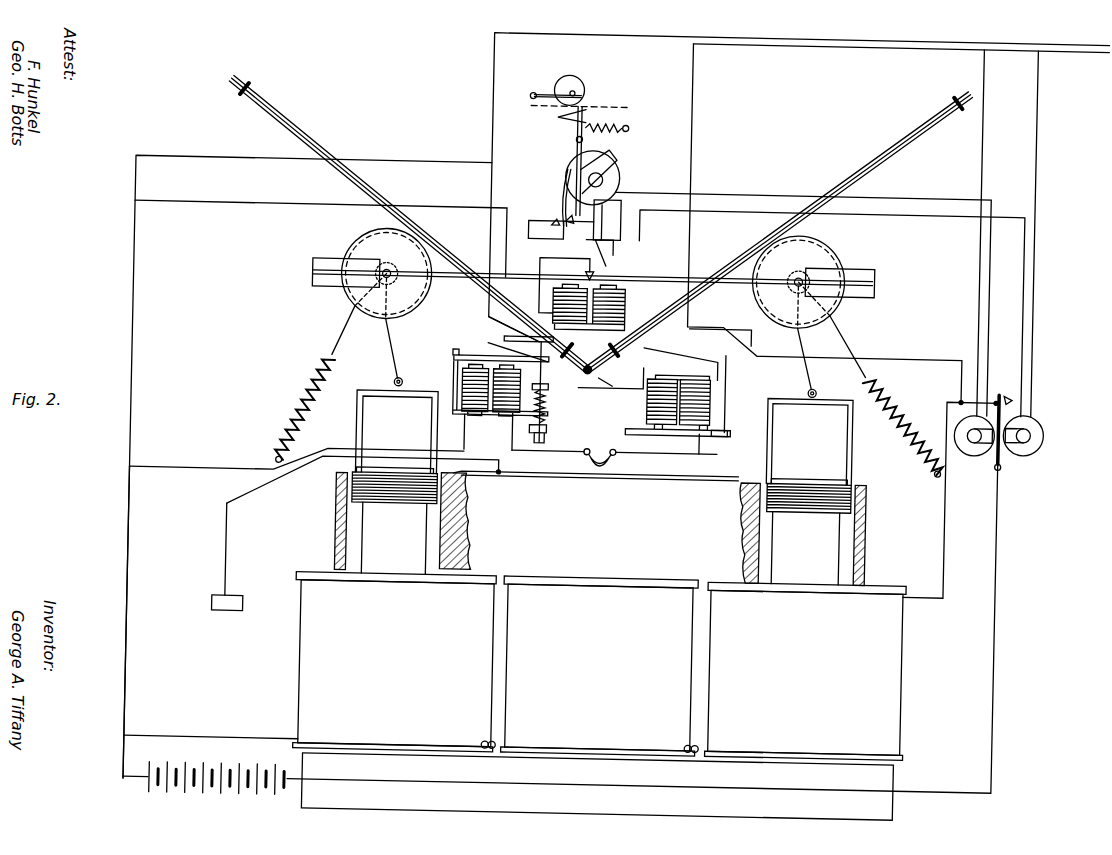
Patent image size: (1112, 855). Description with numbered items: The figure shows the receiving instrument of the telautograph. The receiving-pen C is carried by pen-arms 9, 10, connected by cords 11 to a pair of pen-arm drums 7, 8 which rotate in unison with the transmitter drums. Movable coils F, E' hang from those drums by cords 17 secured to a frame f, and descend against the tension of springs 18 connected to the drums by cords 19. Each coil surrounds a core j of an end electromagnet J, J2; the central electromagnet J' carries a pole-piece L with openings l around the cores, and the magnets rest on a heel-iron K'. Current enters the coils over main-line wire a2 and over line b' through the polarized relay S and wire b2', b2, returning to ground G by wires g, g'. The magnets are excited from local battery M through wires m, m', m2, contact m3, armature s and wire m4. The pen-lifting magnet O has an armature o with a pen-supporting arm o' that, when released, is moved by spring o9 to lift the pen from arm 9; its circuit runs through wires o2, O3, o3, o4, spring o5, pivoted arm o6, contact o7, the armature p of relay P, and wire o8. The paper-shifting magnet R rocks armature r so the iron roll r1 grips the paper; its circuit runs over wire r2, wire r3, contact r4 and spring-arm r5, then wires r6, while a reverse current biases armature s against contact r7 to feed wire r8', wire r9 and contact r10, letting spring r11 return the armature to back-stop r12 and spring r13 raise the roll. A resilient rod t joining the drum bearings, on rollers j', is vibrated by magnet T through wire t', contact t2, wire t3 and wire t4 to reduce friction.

The spring r13 is at (552, 83).
The vertically-movable iron roll r1 is at (580, 88).
The back-stop r12 is at (620, 115).
The rocking armature r is at (570, 144).
The spring r11 is at (608, 130).
The paper-shifting magnet R is at (612, 166).
The spring-arm r5 is at (556, 176).
The contact r4 is at (553, 220).
The wire r3 is at (618, 228).
The contact r10 is at (561, 237).
The wire r9 is at (598, 256).
The wire r2 is at (744, 192).
The conductor r8' is at (830, 307).
The wire r6 is at (428, 160).
The contact r7 is at (1012, 392).
The wire t' is at (321, 224).
The wire t3 is at (537, 262).
The contact t2 is at (586, 272).
The resilient rod t is at (593, 268).
The wire t4 is at (612, 386).
The cords 11 is at (328, 176).
The pen-arm drum 7 is at (372, 273).
The pen-arm drum 8 is at (814, 282).
The pen-arm 9 is at (462, 262).
The pen-arm 10 is at (748, 248).
The cords 17 is at (392, 330).
The cords 19 is at (348, 330).
The springs 18 is at (304, 384).
The main-line wire a2 is at (455, 352).
The wire b2 is at (720, 326).
The conductor b2' is at (827, 223).
The wire b' is at (1058, 234).
The receiving-pen C is at (608, 384).
The magnet T is at (620, 308).
The magnet O is at (457, 378).
The armature o is at (512, 344).
The pen-supporting arm o' is at (528, 348).
The spring o9 is at (548, 405).
The wire o3 is at (490, 424).
The wire o4 is at (551, 441).
The spring o5 is at (608, 449).
The pivoted arm o6 is at (652, 452).
The contact o7 is at (700, 448).
The wire o8 is at (725, 372).
The armature p is at (722, 434).
The relay P is at (647, 402).
The wire O3 is at (222, 476).
The wire o2 is at (131, 620).
The wire g is at (595, 485).
The wire g' is at (364, 483).
The ground G is at (236, 558).
The frame f is at (430, 440).
The movable coil F is at (338, 494).
The electromagnet E' is at (827, 497).
The openings l is at (348, 536).
The core j is at (600, 543).
The pole-piece L is at (601, 537).
The electromagnet J is at (395, 662).
The electromagnet J' is at (600, 666).
The electromagnet J2 is at (806, 671).
The roller j' is at (590, 761).
The base plate K' is at (597, 796).
The wire m is at (129, 788).
The wire m' is at (211, 723).
The wire m2 is at (947, 560).
The contact m3 is at (996, 392).
The wire m4 is at (490, 786).
The local battery M is at (216, 789).
The polarized relay S is at (1000, 428).
The armature s is at (996, 447).